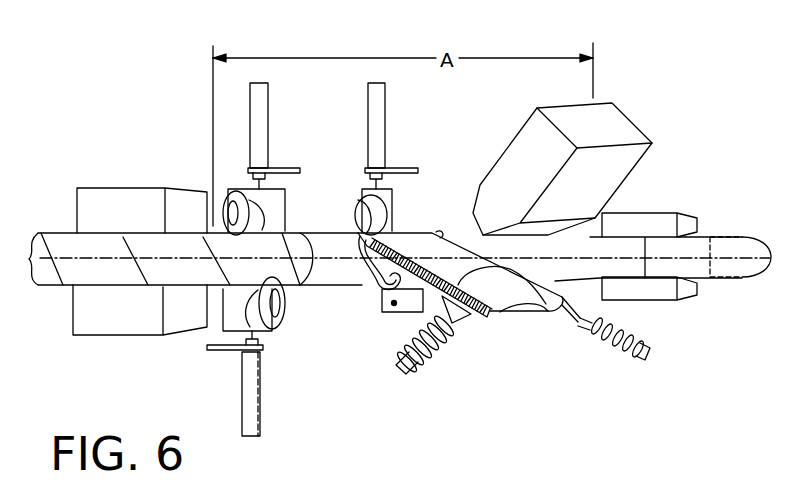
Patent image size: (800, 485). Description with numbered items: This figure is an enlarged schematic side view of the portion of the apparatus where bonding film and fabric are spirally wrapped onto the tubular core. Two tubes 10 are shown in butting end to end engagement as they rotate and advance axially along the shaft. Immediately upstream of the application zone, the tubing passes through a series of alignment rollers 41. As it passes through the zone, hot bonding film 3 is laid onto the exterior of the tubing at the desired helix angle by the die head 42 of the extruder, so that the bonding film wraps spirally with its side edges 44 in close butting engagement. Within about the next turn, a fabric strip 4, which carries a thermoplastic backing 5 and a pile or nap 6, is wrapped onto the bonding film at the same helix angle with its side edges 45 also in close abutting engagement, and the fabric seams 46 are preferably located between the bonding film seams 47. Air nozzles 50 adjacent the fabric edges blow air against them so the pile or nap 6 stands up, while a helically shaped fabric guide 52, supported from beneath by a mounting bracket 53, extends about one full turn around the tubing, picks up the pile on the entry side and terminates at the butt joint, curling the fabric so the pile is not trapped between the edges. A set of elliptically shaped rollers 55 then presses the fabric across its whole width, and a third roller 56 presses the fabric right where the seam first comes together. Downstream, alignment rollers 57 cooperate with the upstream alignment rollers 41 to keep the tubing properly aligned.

The bonding film 3 is at (458, 235).
The fabric 4 is at (512, 312).
The thermoplastic backing 5 is at (552, 311).
The fabric pile/nap 6 is at (502, 283).
The tube 10 is at (620, 240).
The alignment rollers 41 is at (663, 297).
The die head 42 is at (527, 144).
The side edges of the bonding film 44 is at (521, 270).
The side edges of the fabric strip 45 is at (315, 240).
The fabric seams 46 is at (296, 287).
The bonding film seams 47 is at (380, 292).
The air nozzles 50 is at (585, 329).
The helical fabric guide 52 is at (439, 234).
The mounting bracket 53 is at (412, 308).
The elliptically shaped rollers 55 is at (260, 212).
The third roller 56 is at (364, 212).
The alignment rollers 57 is at (144, 196).